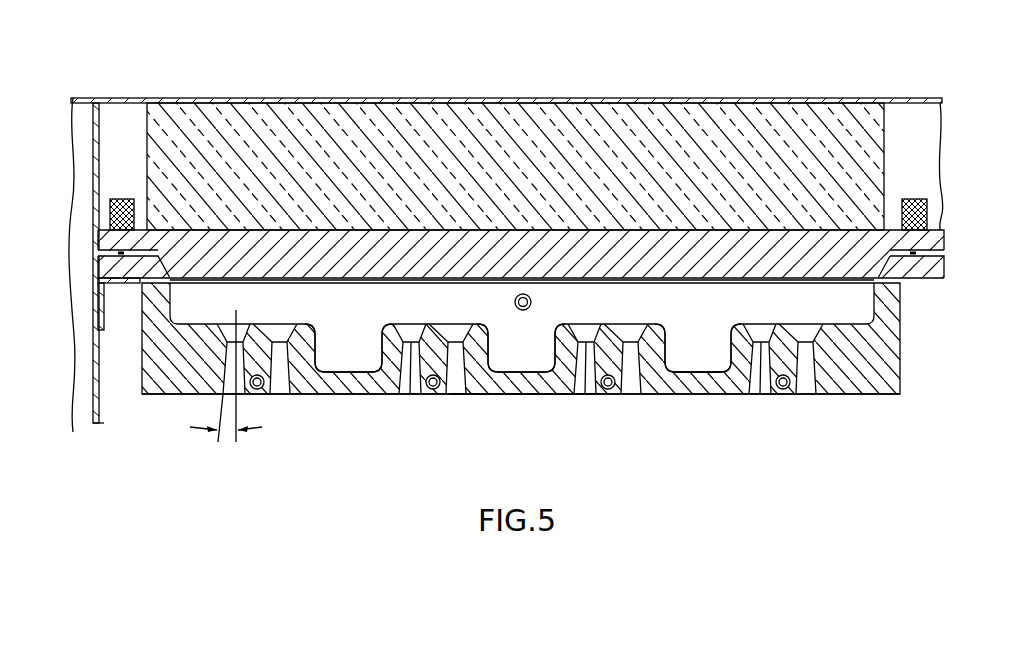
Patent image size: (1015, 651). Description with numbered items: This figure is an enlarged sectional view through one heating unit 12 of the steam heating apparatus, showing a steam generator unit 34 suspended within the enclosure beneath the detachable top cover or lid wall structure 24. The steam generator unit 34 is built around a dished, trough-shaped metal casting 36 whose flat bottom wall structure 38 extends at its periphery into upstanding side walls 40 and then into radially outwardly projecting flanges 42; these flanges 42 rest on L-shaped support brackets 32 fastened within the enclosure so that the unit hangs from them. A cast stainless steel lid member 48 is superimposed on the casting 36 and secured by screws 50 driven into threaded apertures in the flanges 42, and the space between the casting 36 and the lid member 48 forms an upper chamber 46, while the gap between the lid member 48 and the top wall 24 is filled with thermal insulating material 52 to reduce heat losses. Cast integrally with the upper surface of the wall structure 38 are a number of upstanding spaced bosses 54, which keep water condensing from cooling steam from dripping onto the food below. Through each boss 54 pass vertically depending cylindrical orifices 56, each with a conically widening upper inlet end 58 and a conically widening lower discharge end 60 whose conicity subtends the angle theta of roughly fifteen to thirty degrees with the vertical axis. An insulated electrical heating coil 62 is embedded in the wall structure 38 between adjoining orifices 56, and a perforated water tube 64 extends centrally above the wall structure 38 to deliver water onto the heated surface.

The heating unit 12 is at (614, 96).
The top cover or lid wall structure 24 is at (412, 99).
The L-shaped support bracket 32 is at (108, 332).
The steam generator unit 34 is at (906, 306).
The casting 36 is at (880, 395).
The bottom wall structure 38 is at (524, 396).
The upstanding side walls 40 is at (888, 328).
The radially outwardly projecting flanges 42 is at (944, 272).
The upper chamber 46 is at (711, 316).
The lid member 48 is at (830, 228).
The screws 50 is at (110, 222).
The thermal insulating material 52 is at (885, 140).
The bosses 54 is at (317, 332).
The orifices 56 is at (300, 385).
The upper inlet ends 58 is at (240, 326).
The lower discharge ends 60 is at (215, 395).
The electrical heating coil 62 is at (433, 390).
The water tube 64 is at (534, 302).